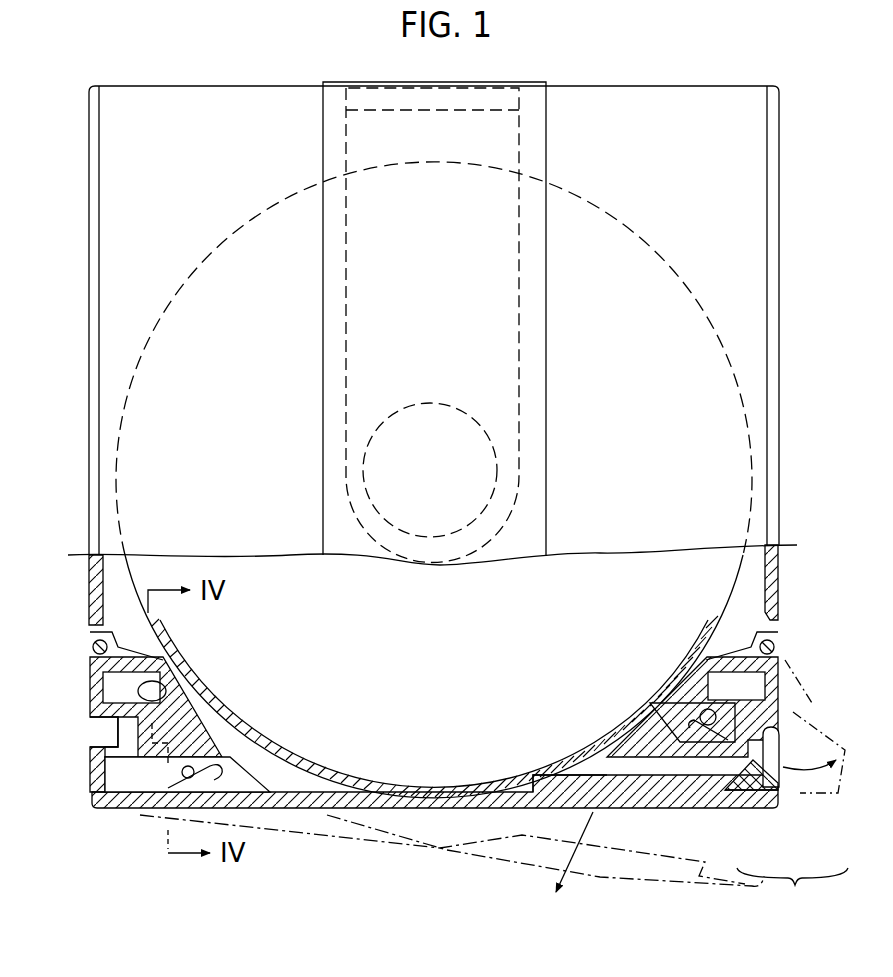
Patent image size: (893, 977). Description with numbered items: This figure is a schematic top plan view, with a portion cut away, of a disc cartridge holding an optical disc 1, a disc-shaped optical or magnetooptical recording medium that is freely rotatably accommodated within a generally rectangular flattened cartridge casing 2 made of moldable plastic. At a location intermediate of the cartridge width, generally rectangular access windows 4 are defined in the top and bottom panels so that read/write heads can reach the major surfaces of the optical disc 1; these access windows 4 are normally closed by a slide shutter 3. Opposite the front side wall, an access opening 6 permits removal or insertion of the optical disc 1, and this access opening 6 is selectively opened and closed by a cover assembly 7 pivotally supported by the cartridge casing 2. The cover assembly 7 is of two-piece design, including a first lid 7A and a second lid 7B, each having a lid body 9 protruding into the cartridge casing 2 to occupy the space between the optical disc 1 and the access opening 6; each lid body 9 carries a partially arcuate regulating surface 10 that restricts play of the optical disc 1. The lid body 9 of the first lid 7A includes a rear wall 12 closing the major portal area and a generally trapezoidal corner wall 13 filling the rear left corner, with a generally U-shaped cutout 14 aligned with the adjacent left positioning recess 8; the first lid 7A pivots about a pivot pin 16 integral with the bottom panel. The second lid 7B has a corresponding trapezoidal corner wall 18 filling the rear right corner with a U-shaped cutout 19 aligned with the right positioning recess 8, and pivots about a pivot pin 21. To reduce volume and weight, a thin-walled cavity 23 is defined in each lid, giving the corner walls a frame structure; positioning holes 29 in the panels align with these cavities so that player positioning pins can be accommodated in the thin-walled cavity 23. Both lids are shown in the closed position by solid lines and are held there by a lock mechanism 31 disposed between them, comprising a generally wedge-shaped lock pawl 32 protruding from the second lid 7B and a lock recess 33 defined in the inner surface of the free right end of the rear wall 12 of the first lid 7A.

The optical disc 1 is at (652, 243).
The cartridge casing 2 is at (790, 176).
The slide shutter 3 is at (547, 352).
The access windows 4 is at (516, 271).
The access opening 6 is at (607, 794).
The cover assembly 7 is at (411, 815).
The first lid 7A is at (306, 808).
The second lid 7B is at (676, 780).
The positioning recesses 8 is at (107, 733).
The lid body 9 is at (300, 762).
The regulating surface 10 is at (634, 735).
The rear wall 12 is at (437, 806).
The corner wall 13 is at (200, 718).
The U-shaped cutout 14 is at (100, 726).
The pivot pin 16 is at (92, 652).
The corner wall 18 is at (680, 702).
The U-shaped cutout 19 is at (786, 783).
The pivot pin 21 is at (763, 640).
The thin-walled cavity 23 is at (207, 755).
The positioning holes 29 is at (150, 692).
The lock mechanism 31 is at (792, 890).
The lock pawl 32 is at (770, 790).
The lock recess 33 is at (751, 795).